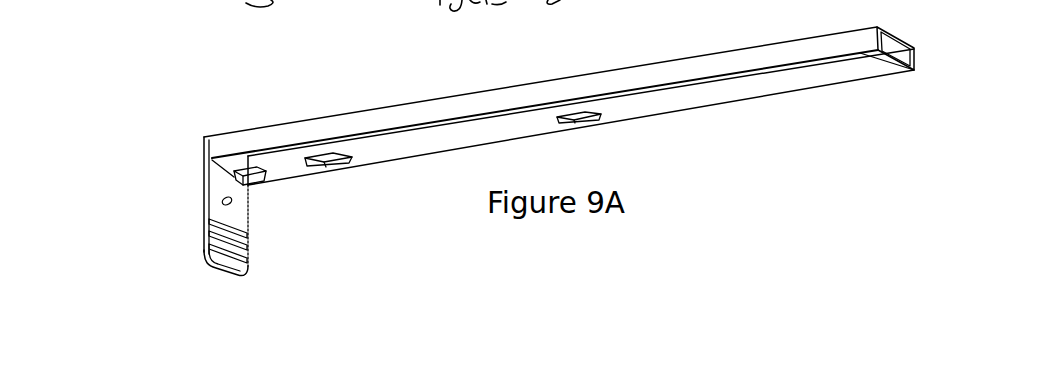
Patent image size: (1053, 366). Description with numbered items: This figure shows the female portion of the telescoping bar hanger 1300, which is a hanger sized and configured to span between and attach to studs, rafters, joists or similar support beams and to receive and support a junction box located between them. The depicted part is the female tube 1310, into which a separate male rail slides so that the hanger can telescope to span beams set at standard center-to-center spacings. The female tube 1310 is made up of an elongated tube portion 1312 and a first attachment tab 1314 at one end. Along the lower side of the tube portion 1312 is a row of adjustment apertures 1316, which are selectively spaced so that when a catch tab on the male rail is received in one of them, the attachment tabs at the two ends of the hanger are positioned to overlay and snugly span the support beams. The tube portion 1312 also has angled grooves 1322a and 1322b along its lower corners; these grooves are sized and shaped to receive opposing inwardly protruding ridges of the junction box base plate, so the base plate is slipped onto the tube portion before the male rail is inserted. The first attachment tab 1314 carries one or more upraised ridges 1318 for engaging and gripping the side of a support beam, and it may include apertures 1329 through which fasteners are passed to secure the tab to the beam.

The bar hanger 1300 is at (252, 77).
The female tube 1310 is at (718, 108).
The tube portion 1312 is at (893, 35).
The first attachment tab 1314 is at (205, 214).
The adjustment apertures 1316 is at (598, 122).
The upraised ridges 1318 is at (247, 261).
The angled groove 1322a is at (787, 65).
The angled groove 1322b is at (918, 71).
The apertures 1329 is at (221, 200).